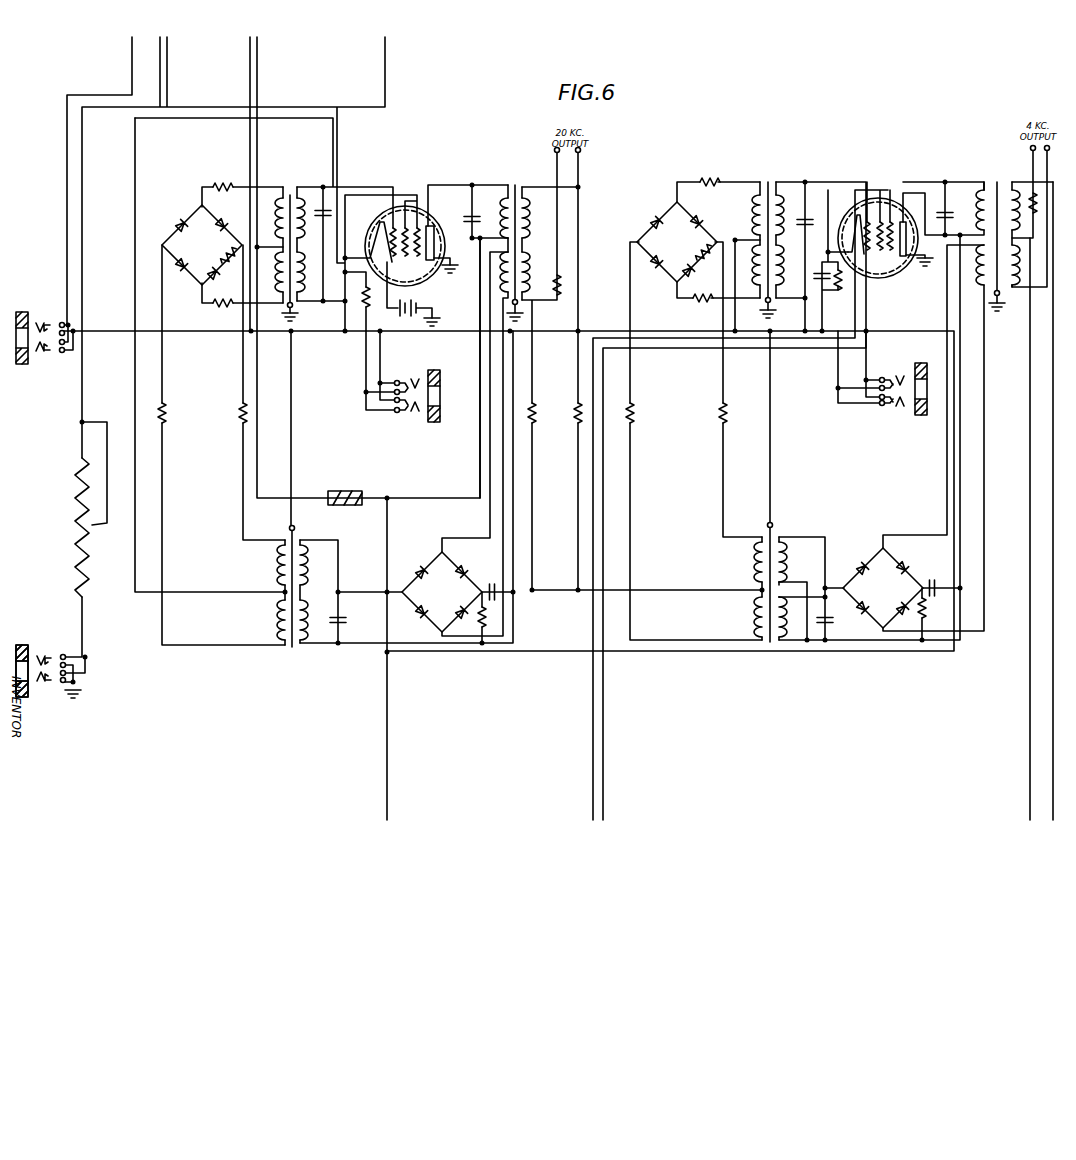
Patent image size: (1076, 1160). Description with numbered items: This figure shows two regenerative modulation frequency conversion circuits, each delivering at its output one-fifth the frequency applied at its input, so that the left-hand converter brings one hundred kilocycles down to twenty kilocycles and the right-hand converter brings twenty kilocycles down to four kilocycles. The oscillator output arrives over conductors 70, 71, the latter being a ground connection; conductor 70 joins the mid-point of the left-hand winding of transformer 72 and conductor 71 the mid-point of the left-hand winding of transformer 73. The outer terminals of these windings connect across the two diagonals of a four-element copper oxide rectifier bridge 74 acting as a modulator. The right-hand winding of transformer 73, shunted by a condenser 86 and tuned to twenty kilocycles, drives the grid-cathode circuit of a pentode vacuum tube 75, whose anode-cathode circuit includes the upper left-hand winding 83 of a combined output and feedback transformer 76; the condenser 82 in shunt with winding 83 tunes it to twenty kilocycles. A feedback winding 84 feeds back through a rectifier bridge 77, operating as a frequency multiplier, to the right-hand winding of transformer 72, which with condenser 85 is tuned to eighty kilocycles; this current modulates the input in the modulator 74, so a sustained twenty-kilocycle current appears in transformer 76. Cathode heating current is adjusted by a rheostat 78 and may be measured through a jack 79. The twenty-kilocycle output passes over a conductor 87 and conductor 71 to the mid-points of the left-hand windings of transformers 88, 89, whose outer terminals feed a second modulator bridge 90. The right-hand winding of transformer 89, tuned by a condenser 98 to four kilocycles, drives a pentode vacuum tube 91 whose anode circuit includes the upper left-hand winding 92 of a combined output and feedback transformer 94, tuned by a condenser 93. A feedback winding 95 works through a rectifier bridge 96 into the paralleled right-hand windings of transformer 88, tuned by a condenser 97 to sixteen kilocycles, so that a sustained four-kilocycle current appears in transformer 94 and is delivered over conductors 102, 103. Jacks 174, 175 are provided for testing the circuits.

The conductor 70 is at (135, 176).
The conductor 71 is at (648, 329).
The transformer 72 is at (298, 645).
The transformer 73 is at (287, 195).
The copper oxide rectifier bridge 74 is at (202, 245).
The vacuum tube 75 is at (426, 268).
The combined output and feedback transformer 76 is at (524, 196).
The copper oxide rectifier bridge 77 is at (442, 592).
The rheostat 78 is at (76, 493).
The jack 79 is at (32, 645).
The condenser 82 is at (472, 214).
The upper left-hand winding 83 is at (489, 240).
The feedback winding 84 is at (497, 282).
The condenser 85 is at (347, 620).
The condenser 86 is at (331, 213).
The conductor 87 is at (676, 590).
The transformer 88 is at (775, 645).
The transformer 89 is at (771, 190).
The copper oxide rectifier bridge 90 is at (677, 242).
The vacuum tube 91 is at (877, 275).
The upper left-hand winding 92 is at (978, 208).
The condenser 93 is at (944, 210).
The combined output and feedback transformer 94 is at (992, 190).
The feedback winding 95 is at (982, 284).
The copper oxide rectifier bridge 96 is at (883, 588).
The condenser 97 is at (832, 624).
The condenser 98 is at (814, 220).
The conductor 102 is at (1030, 762).
The conductor 103 is at (1053, 781).
The jack 174 is at (436, 422).
The jack 175 is at (921, 415).